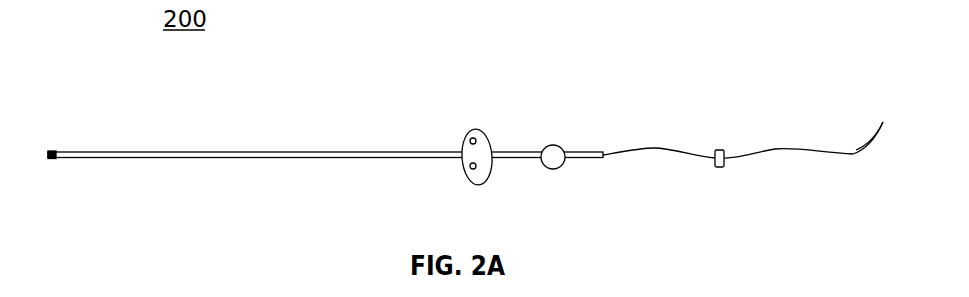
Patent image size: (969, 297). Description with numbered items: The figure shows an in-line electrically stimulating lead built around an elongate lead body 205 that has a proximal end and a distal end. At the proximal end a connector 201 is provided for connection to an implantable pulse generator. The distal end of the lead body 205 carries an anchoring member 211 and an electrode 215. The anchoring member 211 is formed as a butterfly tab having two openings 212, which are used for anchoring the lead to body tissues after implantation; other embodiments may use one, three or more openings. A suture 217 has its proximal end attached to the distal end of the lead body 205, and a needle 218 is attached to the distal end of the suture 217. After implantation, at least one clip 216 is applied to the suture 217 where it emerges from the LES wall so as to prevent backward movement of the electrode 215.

The connector 201 is at (53, 151).
The elongate lead body 205 is at (222, 152).
The anchoring member 211 is at (488, 143).
The openings 212 is at (470, 138).
The electrode 215 is at (548, 150).
The clip 216 is at (720, 150).
The suture 217 is at (787, 148).
The needle 218 is at (880, 129).